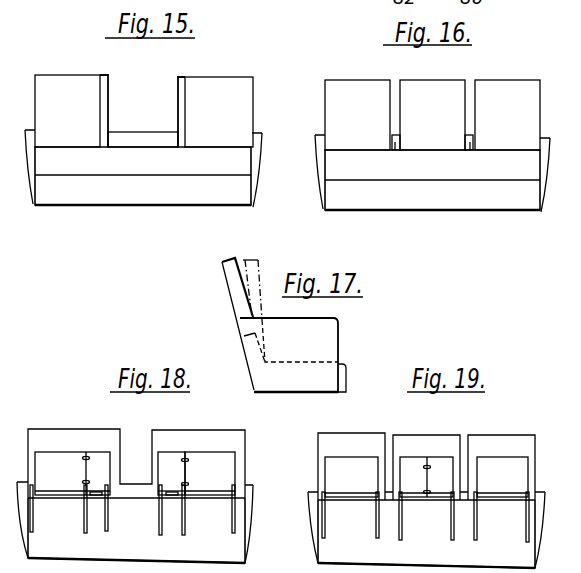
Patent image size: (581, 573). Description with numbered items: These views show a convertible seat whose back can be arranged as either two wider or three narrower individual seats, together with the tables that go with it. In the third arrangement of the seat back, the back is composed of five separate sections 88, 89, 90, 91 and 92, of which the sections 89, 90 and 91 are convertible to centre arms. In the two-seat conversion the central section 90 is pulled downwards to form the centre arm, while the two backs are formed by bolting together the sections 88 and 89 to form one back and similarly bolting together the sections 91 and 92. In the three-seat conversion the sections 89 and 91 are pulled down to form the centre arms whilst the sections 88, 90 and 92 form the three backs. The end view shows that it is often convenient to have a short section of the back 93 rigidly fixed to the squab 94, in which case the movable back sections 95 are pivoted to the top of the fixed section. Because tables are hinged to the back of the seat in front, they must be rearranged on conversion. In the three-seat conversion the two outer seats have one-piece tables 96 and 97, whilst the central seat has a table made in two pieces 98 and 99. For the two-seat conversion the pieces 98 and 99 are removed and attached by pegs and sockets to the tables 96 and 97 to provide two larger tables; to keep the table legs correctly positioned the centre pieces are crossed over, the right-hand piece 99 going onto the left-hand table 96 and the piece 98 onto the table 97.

In FIG. 15, the seat back section 88 is at (68, 88).
In FIG. 16, the seat back section 88 is at (357, 97).
In FIG. 15, the seat back section 89 is at (109, 80).
In FIG. 16, the seat back section 89 is at (393, 150).
In FIG. 15, the seat back section 90 is at (137, 140).
In FIG. 16, the seat back section 90 is at (435, 90).
In FIG. 15, the seat back section 91 is at (180, 88).
In FIG. 16, the seat back section 91 is at (467, 150).
In FIG. 15, the seat back section 92 is at (211, 90).
In FIG. 16, the seat back section 92 is at (503, 93).
In FIG. 17, the short section of the back 93 is at (243, 364).
In FIG. 17, the squab 94 is at (303, 383).
In FIG. 17, the movable back sections 95 is at (238, 291).
In FIG. 18, the table 96 is at (56, 462).
In FIG. 19, the table 96 is at (352, 472).
In FIG. 18, the table 97 is at (215, 460).
In FIG. 19, the table 97 is at (495, 463).
In FIG. 18, the table piece 98 is at (170, 460).
In FIG. 19, the table piece 98 is at (413, 468).
In FIG. 18, the table piece 99 is at (97, 458).
In FIG. 19, the table piece 99 is at (440, 465).